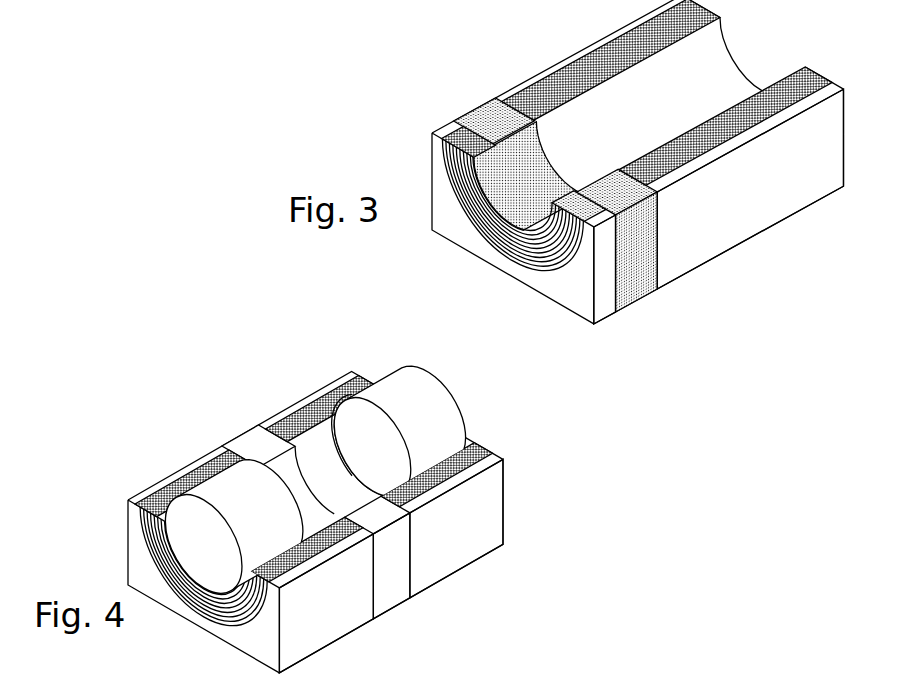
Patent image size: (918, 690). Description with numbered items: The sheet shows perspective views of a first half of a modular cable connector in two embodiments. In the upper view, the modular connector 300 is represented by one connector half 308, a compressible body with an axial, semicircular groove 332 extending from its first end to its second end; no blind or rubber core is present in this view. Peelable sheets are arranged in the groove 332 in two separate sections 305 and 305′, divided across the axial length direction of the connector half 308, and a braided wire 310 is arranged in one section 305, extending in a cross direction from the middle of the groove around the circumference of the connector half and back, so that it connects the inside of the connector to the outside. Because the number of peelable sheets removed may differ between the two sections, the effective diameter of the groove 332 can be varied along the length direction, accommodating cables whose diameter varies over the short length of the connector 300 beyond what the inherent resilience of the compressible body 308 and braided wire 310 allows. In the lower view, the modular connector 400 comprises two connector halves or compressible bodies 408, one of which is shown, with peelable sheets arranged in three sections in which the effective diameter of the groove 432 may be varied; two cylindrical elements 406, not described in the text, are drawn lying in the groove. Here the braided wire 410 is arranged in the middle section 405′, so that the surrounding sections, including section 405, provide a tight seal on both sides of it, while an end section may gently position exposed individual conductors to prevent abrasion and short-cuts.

In FIG. 3, the modular connector 300 is at (400, 71).
In FIG. 3, the peelable sheet section 305 is at (432, 136).
In FIG. 3, the peelable sheet section 305′ is at (770, 91).
In FIG. 3, the connector half 308 is at (698, 245).
In FIG. 3, the braided wire 310 is at (657, 290).
In FIG. 3, the groove 332 is at (487, 245).
In FIG. 4, the modular connector 400 is at (210, 368).
In FIG. 4, the peelable sheet section 405 is at (146, 521).
In FIG. 4, the peelable sheet section 405′ is at (287, 411).
In FIG. 4, the cylindrical core insert 406 is at (457, 428).
In FIG. 4, the connector half 408 is at (437, 553).
In FIG. 4, the braided wire 410 is at (393, 593).
In FIG. 4, the groove 432 is at (222, 592).